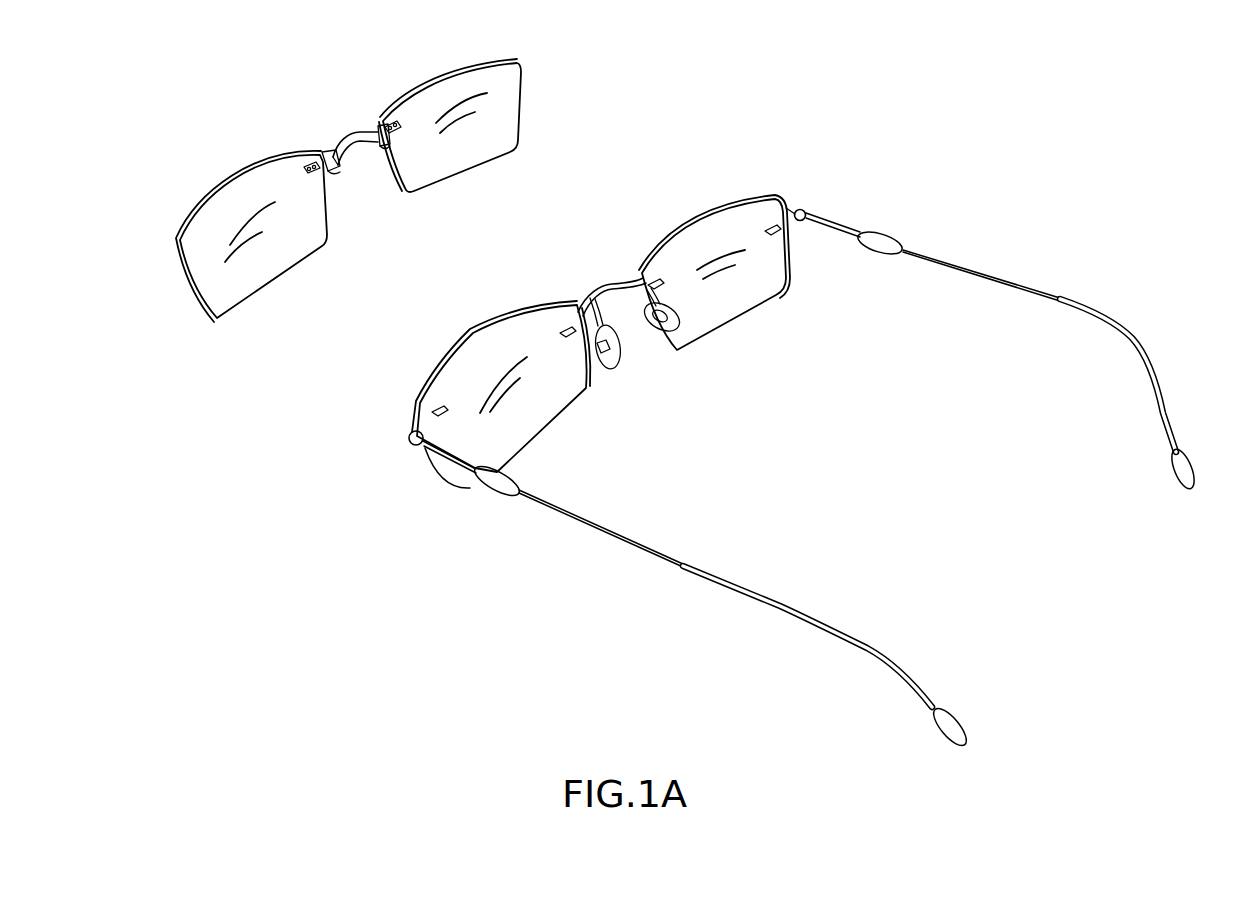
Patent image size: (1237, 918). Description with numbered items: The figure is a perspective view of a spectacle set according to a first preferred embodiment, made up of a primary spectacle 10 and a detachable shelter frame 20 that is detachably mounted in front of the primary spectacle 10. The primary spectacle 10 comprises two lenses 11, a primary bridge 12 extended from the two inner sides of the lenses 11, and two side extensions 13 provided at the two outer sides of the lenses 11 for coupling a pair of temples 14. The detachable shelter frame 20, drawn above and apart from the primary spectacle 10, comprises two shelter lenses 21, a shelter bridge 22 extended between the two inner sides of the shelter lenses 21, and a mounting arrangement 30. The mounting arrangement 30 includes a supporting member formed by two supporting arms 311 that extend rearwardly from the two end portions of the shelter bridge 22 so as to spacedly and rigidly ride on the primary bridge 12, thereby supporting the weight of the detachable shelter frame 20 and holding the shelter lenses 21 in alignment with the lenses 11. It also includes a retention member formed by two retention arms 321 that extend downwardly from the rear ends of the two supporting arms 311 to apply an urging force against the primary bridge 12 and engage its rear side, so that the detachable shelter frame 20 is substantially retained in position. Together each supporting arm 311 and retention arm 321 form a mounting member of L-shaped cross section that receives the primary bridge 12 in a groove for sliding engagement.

The primary spectacle 10 is at (888, 483).
The lenses 11 is at (548, 405).
The primary bridge 12 is at (608, 291).
The side extensions 13 is at (412, 447).
The temples 14 is at (590, 528).
The detachable shelter frame 20 is at (199, 427).
The shelter lenses 21 is at (263, 272).
The shelter bridge 22 is at (342, 140).
The mounting arrangement 30 is at (265, 73).
The supporting arms 311 is at (374, 120).
The retention arms 321 is at (383, 148).